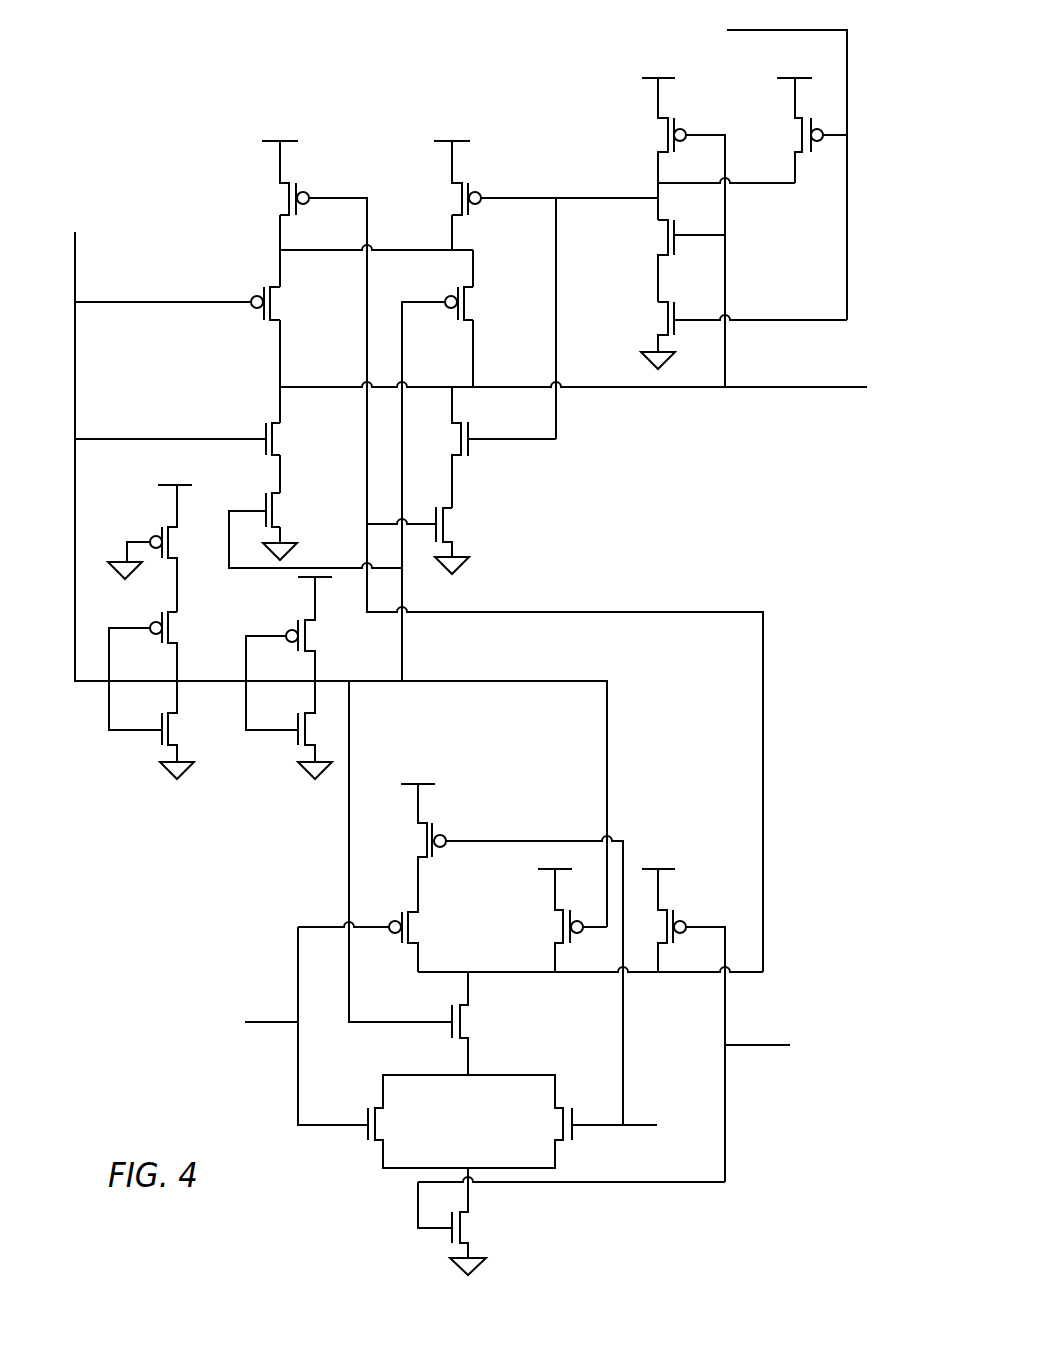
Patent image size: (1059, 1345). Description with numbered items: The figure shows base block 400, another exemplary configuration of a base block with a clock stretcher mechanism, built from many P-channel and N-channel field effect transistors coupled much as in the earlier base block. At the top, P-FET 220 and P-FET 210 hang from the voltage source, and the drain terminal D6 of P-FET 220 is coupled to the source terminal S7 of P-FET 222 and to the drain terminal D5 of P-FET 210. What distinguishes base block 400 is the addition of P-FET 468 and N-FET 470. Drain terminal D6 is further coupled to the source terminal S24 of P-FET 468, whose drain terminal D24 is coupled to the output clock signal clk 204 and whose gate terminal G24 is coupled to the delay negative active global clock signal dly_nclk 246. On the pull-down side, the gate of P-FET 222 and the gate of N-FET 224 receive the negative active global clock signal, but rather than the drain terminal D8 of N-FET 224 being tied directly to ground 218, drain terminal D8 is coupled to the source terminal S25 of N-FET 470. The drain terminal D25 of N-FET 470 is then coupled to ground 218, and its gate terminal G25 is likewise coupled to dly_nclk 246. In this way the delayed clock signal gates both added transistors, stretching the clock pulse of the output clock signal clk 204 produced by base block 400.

The base block 400 is at (164, 97).
The P-FET 220 is at (261, 194).
The P-FET 210 is at (471, 163).
The P-FET 222 is at (303, 297).
The P-FET 468 is at (491, 293).
The N-FET 224 is at (301, 433).
The N-FET 470 is at (299, 514).
The ground 218 is at (288, 553).
The output clock signal (clk) 204 is at (808, 387).
The delay negative active global clock signal (dly_nclk) 246 is at (520, 680).
The drain terminal D6 is at (280, 222).
The source terminal S7 is at (280, 266).
The drain terminal D5 is at (452, 222).
The source terminal S24 is at (473, 266).
The gate terminal G24 is at (440, 299).
The drain terminal D24 is at (473, 346).
The drain terminal D8 is at (280, 457).
The source terminal S25 is at (280, 480).
The gate terminal G25 is at (248, 510).
The drain terminal D25 is at (280, 528).